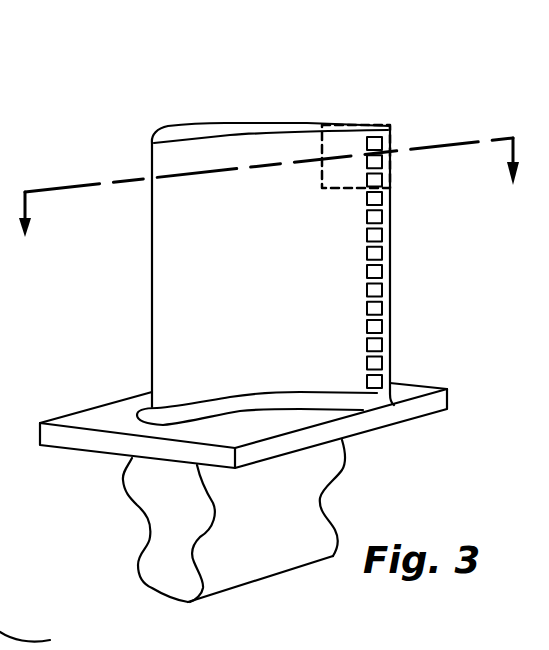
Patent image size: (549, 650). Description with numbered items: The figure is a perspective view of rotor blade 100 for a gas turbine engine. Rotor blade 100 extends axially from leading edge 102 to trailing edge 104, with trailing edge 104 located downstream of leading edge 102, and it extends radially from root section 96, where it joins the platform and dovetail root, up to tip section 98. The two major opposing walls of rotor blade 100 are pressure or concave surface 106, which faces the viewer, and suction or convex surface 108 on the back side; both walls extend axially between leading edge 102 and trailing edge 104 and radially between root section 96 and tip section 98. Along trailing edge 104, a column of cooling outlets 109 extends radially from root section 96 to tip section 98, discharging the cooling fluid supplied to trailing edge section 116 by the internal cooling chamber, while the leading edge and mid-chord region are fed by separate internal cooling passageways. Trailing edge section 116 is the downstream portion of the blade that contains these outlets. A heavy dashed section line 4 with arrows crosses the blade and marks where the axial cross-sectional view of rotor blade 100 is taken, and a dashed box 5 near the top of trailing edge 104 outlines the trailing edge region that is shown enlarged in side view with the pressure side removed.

The rotor blade 100 is at (277, 78).
The leading edge 102 is at (152, 143).
The trailing edge 104 is at (393, 131).
The tip section 98 is at (312, 126).
The suction or convex surface (back) 108 is at (220, 110).
The pressure or concave surface (front) 106 is at (192, 272).
The root section 96 is at (167, 382).
The cooling outlets 109 is at (376, 270).
The trailing edge section 116 is at (70, 649).
The section line 4- 4 is at (270, 206).
The enlarged trailing edge region 5 is at (390, 185).